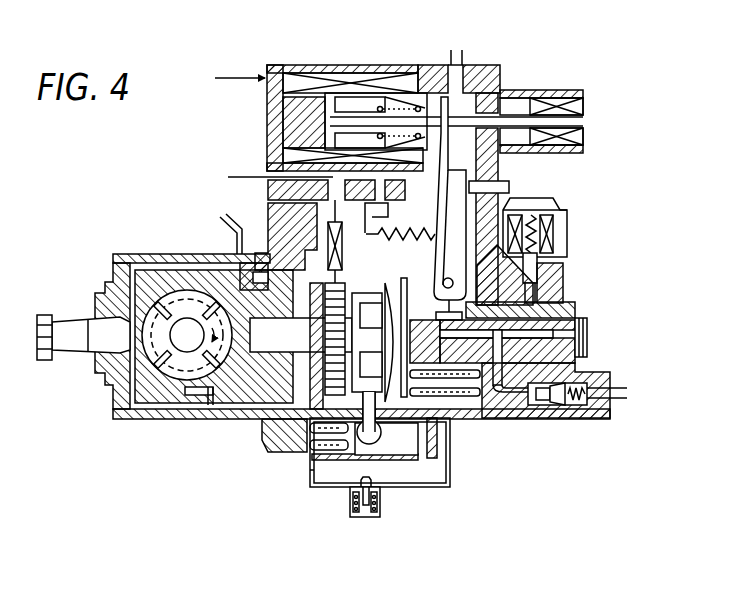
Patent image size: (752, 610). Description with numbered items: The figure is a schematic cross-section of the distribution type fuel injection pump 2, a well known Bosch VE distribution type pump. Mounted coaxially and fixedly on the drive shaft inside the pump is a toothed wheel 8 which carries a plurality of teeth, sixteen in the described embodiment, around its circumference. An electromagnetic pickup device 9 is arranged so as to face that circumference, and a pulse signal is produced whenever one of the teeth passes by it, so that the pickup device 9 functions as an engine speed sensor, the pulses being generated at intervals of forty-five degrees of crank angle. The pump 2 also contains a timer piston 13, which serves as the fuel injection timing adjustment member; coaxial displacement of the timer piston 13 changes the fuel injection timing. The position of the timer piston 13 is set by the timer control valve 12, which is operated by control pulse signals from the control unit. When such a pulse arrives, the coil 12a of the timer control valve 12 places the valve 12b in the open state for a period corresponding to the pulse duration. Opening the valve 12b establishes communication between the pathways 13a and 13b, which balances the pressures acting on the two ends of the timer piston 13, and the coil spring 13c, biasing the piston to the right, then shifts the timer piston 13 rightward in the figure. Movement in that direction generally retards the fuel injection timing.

The injection pump 2 is at (361, 63).
The toothed wheel 8 is at (345, 290).
The electromagnetic pickup device 9 is at (343, 246).
The timer control valve 12 is at (366, 517).
The coil 12a is at (380, 513).
The valve 12b is at (353, 513).
The timer piston 13 is at (407, 447).
The pathway 13a is at (450, 468).
The pathway 13b is at (310, 476).
The coil spring 13c is at (312, 453).